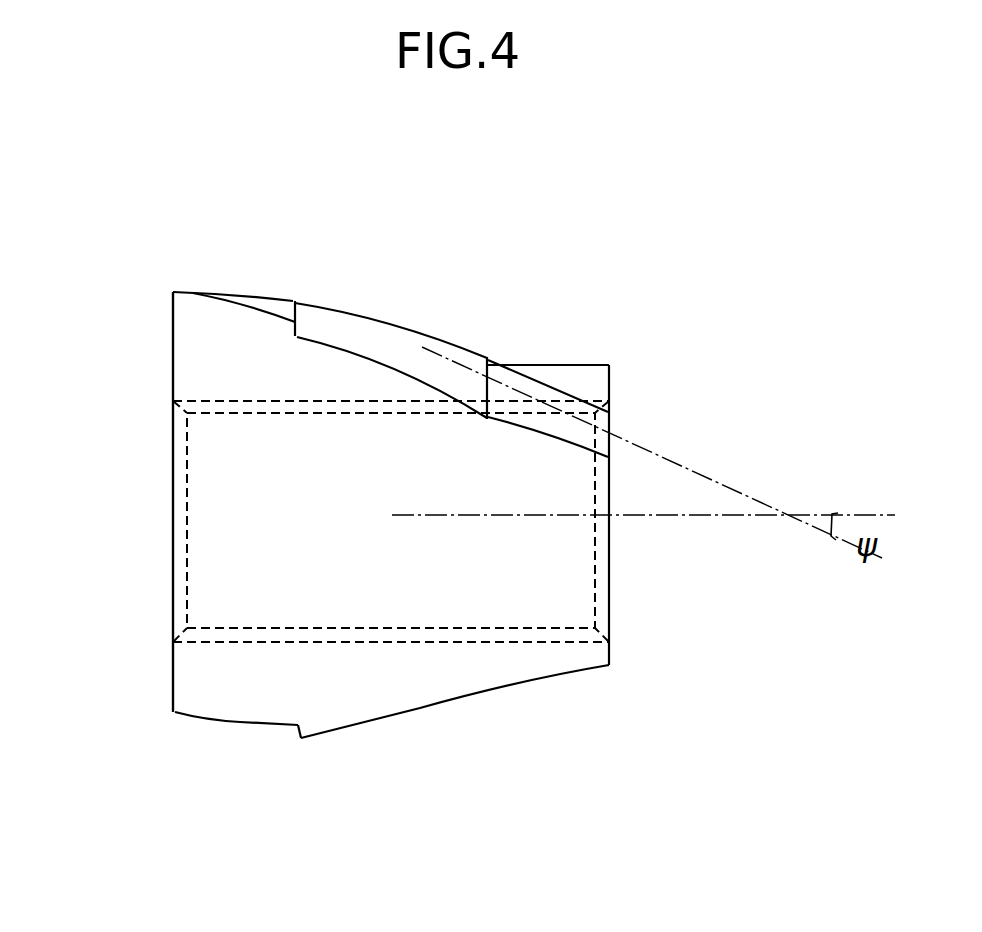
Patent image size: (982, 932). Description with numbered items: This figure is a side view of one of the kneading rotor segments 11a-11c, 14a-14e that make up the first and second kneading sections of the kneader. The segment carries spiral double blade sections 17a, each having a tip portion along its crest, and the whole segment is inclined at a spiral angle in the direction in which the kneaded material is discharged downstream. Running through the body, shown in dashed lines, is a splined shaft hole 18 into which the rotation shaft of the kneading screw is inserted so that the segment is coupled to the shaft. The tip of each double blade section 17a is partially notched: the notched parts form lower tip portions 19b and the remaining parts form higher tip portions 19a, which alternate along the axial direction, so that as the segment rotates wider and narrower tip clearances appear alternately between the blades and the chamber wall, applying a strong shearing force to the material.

The kneading rotor segment 11a is at (197, 291).
The kneading rotor segment 11c is at (391, 515).
The kneading rotor segment 14a is at (391, 515).
The kneading rotor segment 14e is at (391, 515).
The double blade section 17a is at (210, 343).
The shaft hole 18 is at (212, 413).
The higher tip portion 19a is at (252, 293).
The lower tip portion 19b is at (395, 343).